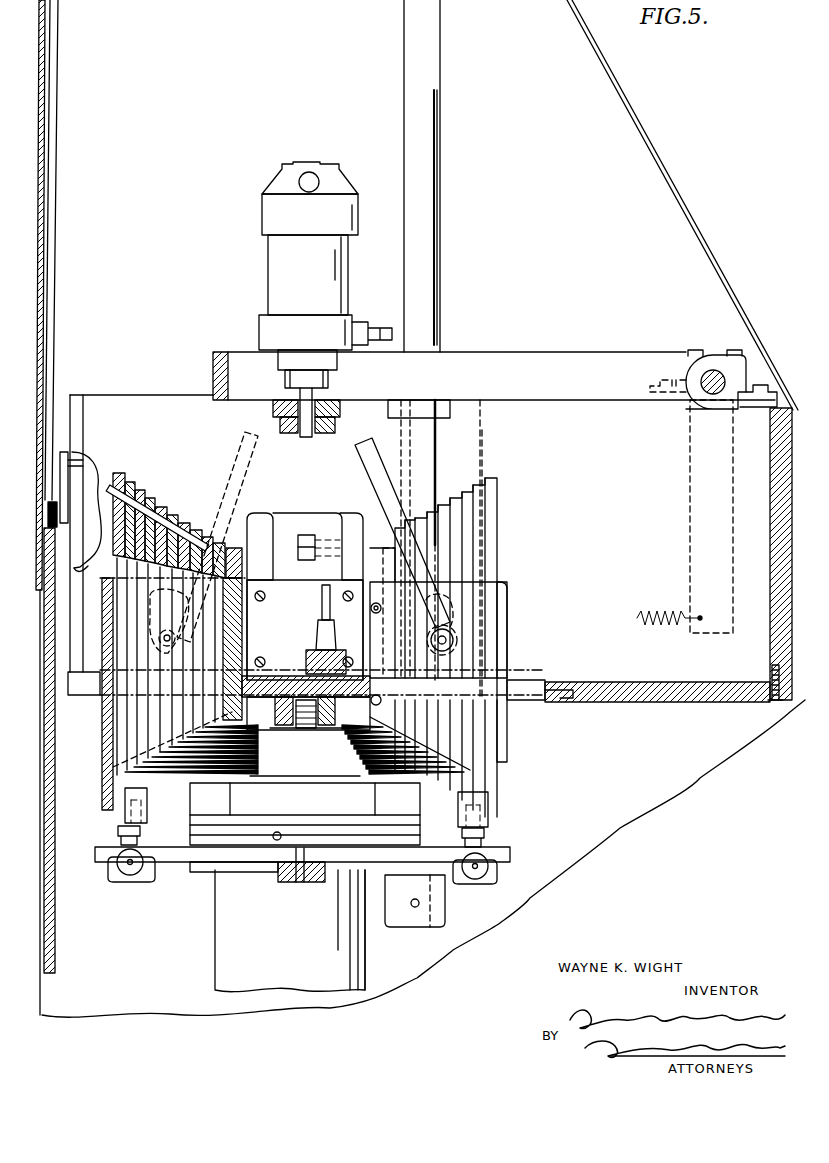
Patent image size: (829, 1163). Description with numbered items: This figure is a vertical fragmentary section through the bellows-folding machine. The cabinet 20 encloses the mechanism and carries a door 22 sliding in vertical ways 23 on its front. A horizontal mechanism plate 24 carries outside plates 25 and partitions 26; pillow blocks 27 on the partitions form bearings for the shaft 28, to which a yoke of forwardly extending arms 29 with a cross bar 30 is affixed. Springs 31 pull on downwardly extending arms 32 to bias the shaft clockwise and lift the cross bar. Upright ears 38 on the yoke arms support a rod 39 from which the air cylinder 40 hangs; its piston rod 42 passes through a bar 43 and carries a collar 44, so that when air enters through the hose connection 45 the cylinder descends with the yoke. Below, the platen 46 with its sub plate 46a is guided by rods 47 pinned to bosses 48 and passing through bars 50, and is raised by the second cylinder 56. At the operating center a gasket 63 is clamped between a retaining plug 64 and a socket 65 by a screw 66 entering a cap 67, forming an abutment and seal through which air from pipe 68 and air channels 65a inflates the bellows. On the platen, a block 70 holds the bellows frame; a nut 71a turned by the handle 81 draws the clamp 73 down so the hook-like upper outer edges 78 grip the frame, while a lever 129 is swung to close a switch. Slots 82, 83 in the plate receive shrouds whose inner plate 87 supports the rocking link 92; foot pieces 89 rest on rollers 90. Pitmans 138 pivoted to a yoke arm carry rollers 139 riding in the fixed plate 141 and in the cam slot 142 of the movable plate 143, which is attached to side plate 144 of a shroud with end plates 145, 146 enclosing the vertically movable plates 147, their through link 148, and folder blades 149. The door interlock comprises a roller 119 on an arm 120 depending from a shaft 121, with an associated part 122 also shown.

The cabinet 20 is at (662, 174).
The door 22 is at (44, 826).
The vertical ways 23 is at (56, 331).
The mechanism plate 24 is at (664, 680).
The outside plates 25 is at (770, 528).
The partitions 26 is at (118, 396).
The pillow blocks 27 is at (723, 356).
The shaft 28 is at (705, 376).
The yoke arms 29 is at (580, 362).
The cross bar 30 is at (215, 352).
The springs 31 is at (647, 611).
The downwardly extending arms 32 is at (689, 480).
The upright ears 38 is at (284, 170).
The rod 39 is at (310, 176).
The air cylinder 40 is at (308, 275).
The piston rod 42 is at (312, 438).
The bar 43 is at (272, 405).
The collar 44 is at (336, 425).
The hose connection 45 is at (362, 322).
The platen 46 is at (172, 862).
The sub plate 46a is at (205, 872).
The guide rods 47 is at (424, 264).
The bosses 48 is at (443, 924).
The bars 50 is at (440, 418).
The second cylinder 56 is at (290, 931).
The gasket 63 is at (285, 727).
The retaining plug 64 is at (306, 752).
The socket 65 is at (327, 727).
The air channels 65a is at (306, 728).
The screw 66 is at (317, 650).
The cap 67 is at (263, 665).
The pipe 68 is at (322, 599).
The block 70 is at (305, 799).
The nut 71a is at (200, 832).
The clamp 73 is at (320, 770).
The hook-like upper outer edges 78 is at (305, 819).
The handle 81 is at (276, 842).
The slot 82 is at (82, 696).
The slot 83 is at (530, 684).
The inner plate 87 is at (322, 522).
The foot piece 89 is at (118, 842).
The roller 90 is at (133, 882).
The link 92 is at (309, 534).
The roller 119 is at (57, 530).
The arm 120 is at (60, 506).
The shaft 121 is at (80, 463).
The bracket 122 is at (85, 455).
The lever 129 is at (320, 872).
The pitmans 138 is at (240, 442).
The roller 139 is at (453, 640).
The fixed plate 141 is at (484, 452).
The cam slot 142 is at (446, 600).
The movable plate 143 is at (462, 618).
The side plate 144 is at (500, 753).
The end plate 145 is at (232, 548).
The end plate 146 is at (104, 775).
The vertically movable plates 147 is at (174, 513).
The through link 148 is at (157, 493).
The folder blades 149 is at (170, 797).